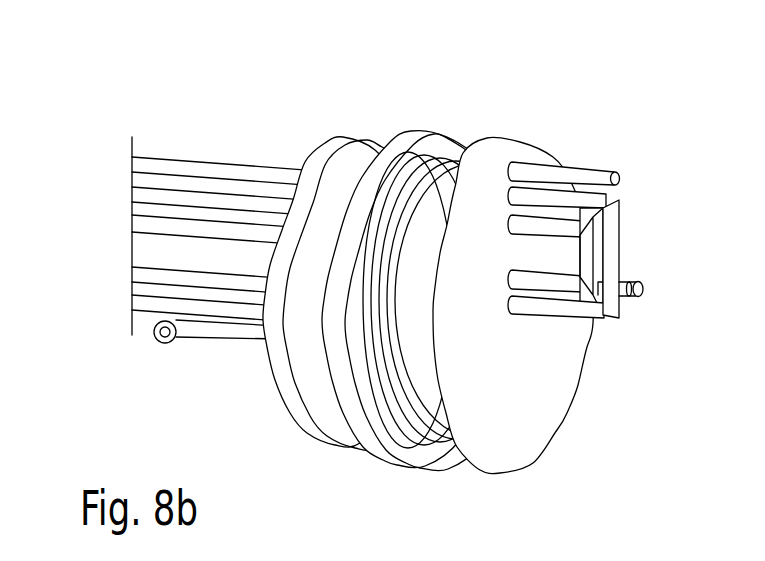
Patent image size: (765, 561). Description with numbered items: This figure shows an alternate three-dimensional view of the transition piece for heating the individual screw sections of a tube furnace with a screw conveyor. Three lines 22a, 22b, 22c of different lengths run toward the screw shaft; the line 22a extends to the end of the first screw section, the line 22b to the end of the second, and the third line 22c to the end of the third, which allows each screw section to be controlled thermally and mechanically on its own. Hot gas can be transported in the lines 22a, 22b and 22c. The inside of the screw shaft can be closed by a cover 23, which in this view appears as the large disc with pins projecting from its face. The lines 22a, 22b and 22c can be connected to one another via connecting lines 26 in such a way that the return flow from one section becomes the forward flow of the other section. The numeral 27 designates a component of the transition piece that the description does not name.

The line 22a is at (157, 223).
The line 22b is at (222, 207).
The third line 22c is at (177, 162).
The cover 23 is at (552, 395).
The connecting lines 26 is at (614, 229).
The coil 27 is at (430, 145).